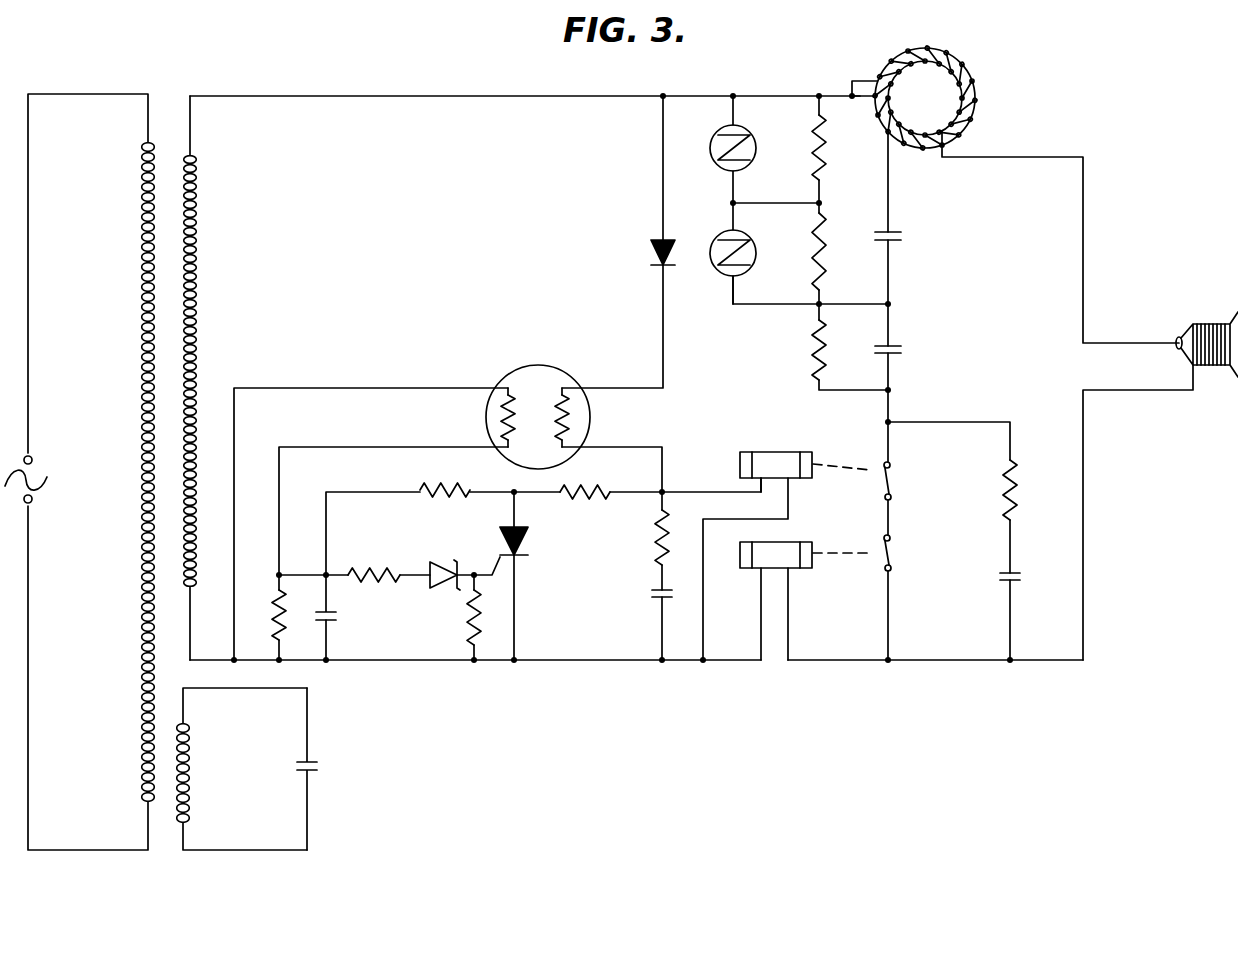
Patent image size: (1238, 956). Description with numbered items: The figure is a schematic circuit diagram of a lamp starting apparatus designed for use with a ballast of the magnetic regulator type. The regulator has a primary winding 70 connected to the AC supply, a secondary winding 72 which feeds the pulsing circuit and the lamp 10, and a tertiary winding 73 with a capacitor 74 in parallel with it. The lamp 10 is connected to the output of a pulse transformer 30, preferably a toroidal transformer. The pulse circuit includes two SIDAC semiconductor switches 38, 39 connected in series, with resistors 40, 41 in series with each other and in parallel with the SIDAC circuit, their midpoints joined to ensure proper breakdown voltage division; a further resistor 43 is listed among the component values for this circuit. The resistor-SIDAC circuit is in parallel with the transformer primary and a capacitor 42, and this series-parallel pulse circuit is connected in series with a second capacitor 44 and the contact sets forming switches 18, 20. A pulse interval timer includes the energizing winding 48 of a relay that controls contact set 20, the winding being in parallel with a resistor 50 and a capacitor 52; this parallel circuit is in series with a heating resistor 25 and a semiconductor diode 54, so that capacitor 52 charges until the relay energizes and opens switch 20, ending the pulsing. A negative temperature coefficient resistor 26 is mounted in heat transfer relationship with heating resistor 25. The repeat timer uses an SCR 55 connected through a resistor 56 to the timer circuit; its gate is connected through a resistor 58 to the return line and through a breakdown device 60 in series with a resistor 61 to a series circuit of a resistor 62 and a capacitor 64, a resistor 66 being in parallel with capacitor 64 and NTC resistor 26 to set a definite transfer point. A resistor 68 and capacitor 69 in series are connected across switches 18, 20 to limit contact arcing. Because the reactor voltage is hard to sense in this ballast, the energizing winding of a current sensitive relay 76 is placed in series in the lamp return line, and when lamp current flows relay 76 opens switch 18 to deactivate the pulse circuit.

The lamp 10 is at (1224, 382).
The switch 18 is at (888, 553).
The switch 20 is at (885, 483).
The heating resistor 25 is at (580, 421).
The negative temperature coefficient resistor 26 is at (503, 422).
The pulse transformer 30 is at (994, 67).
The two-terminal semiconductor switch 38 is at (757, 140).
The two-terminal semiconductor switch 39 is at (757, 246).
The resistor 40 is at (827, 178).
The resistor 41 is at (829, 258).
The capacitor 42 is at (904, 232).
The resistor 43 is at (812, 349).
The second capacitor 44 is at (904, 345).
The energizing winding 48 is at (773, 452).
The resistor 50 is at (668, 524).
The capacitor 52 is at (652, 597).
The semiconductor diode 54 is at (652, 249).
The SCR 55 is at (530, 540).
The resistor 56 is at (597, 497).
The resistor 58 is at (466, 616).
The breakdown device 60 is at (446, 563).
The resistor 61 is at (380, 578).
The resistor 62 is at (425, 490).
The capacitor 64 is at (337, 616).
The resistor 66 is at (272, 618).
The resistor 68 is at (1022, 472).
The capacitor 69 is at (1022, 575).
The primary winding 70 is at (145, 236).
The secondary winding 72 is at (198, 163).
The tertiary winding 73 is at (192, 729).
The capacitor 74 is at (320, 765).
The current sensitive relay 76 is at (803, 570).